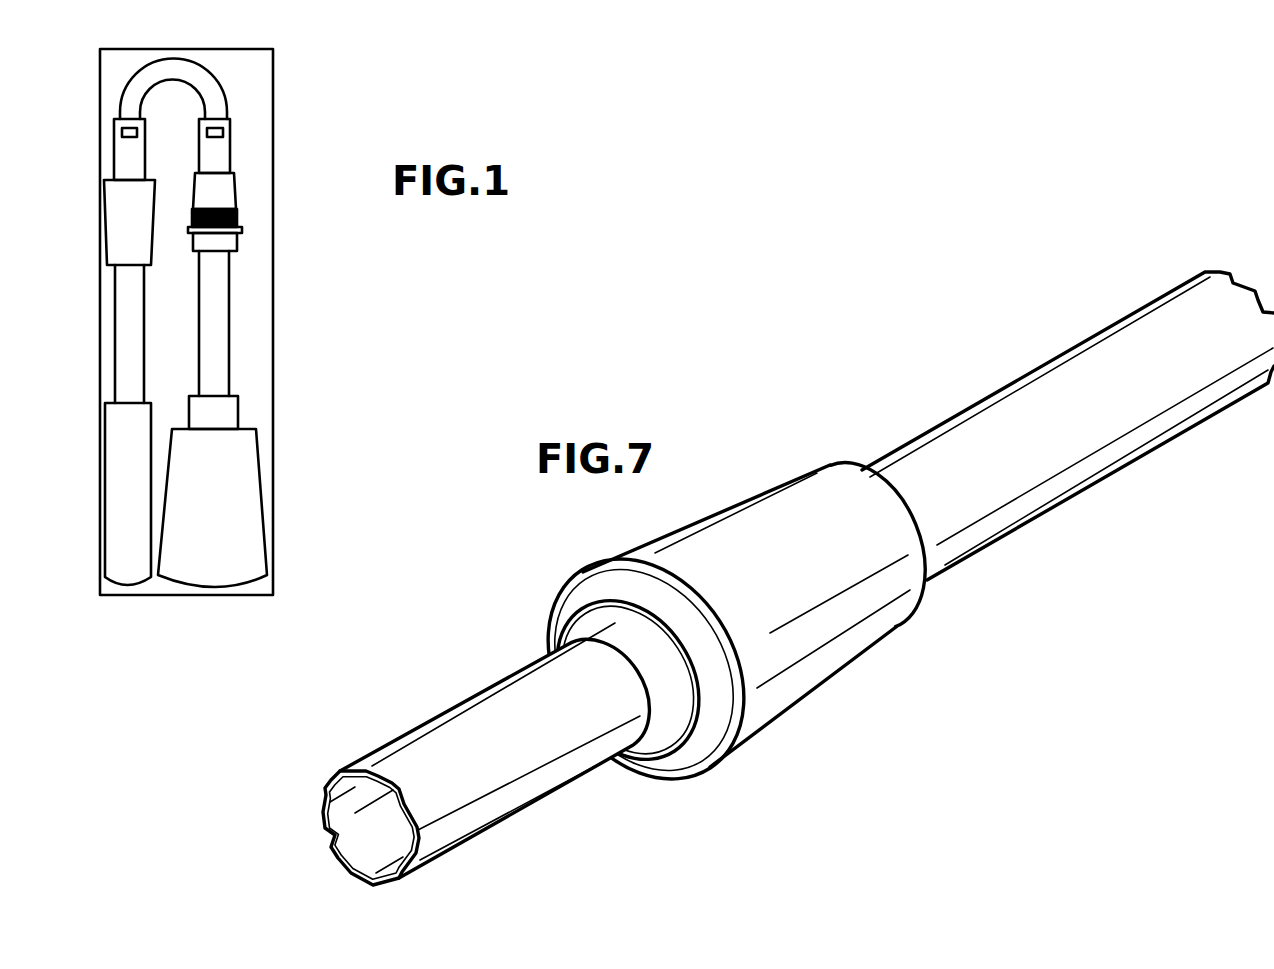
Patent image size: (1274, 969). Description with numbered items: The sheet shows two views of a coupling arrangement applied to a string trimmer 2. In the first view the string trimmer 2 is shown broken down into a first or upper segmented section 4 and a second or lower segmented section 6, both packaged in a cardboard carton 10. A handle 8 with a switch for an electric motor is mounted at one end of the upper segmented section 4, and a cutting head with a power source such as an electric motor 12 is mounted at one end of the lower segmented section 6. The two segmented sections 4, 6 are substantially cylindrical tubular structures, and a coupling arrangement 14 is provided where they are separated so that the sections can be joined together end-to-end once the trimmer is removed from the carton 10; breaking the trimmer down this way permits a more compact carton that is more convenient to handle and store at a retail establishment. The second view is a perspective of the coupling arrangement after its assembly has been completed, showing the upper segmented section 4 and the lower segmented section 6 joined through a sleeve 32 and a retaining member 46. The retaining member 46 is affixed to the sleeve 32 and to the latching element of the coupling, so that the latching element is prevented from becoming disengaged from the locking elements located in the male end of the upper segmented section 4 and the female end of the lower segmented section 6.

In FIG. 1, the string trimmer 2 is at (250, 362).
In FIG. 1, the first or upper segmented section 4 is at (130, 337).
In FIG. 7, the first or upper segmented section 4 is at (1010, 378).
In FIG. 1, the second or lower segmented section 6 is at (218, 298).
In FIG. 7, the second or lower segmented section 6 is at (445, 702).
In FIG. 1, the handle 8 is at (115, 493).
In FIG. 1, the cardboard carton 10 is at (274, 89).
In FIG. 1, the cutting head with electric motor 12 is at (233, 506).
In FIG. 1, the coupling arrangement 14 is at (250, 169).
In FIG. 7, the sleeve 32 is at (662, 750).
In FIG. 7, the retaining member 46 is at (809, 700).